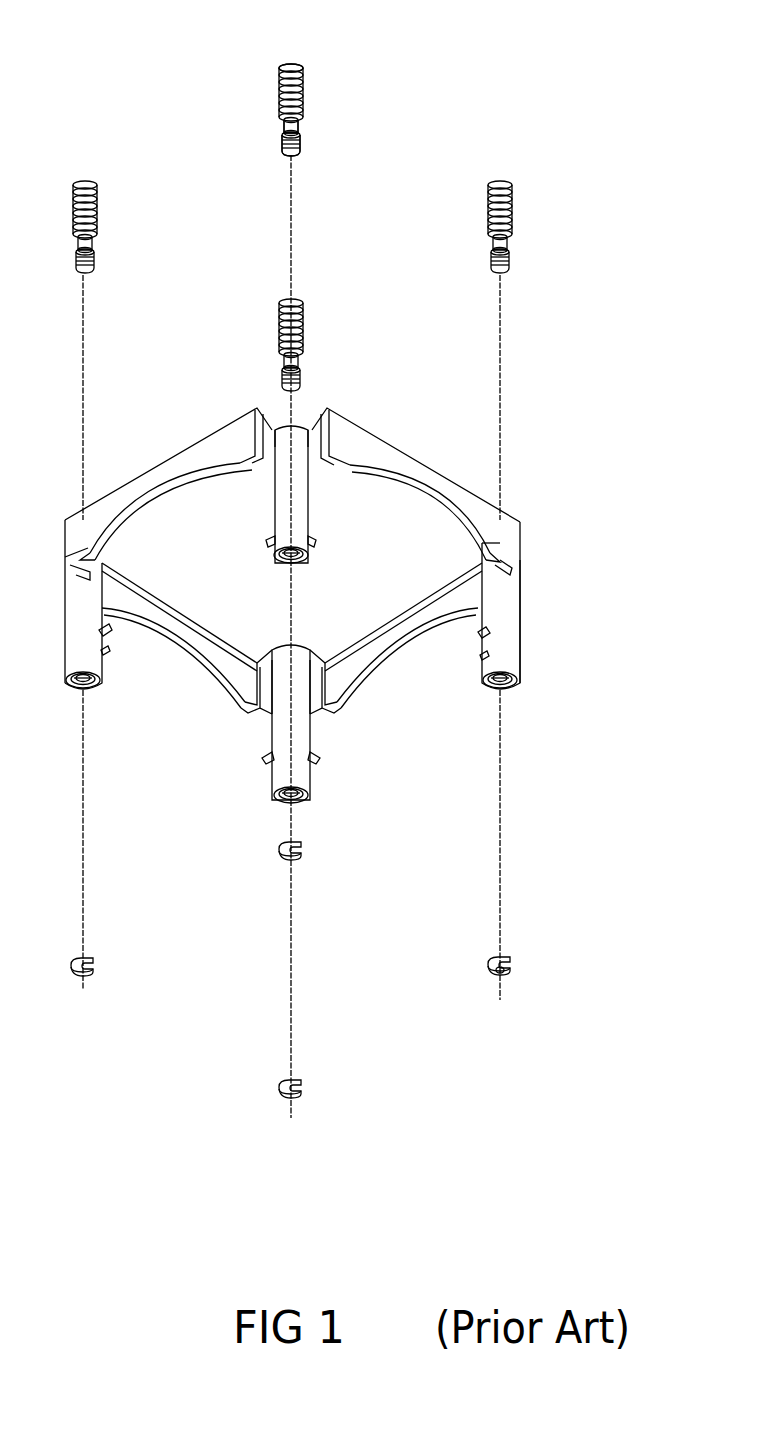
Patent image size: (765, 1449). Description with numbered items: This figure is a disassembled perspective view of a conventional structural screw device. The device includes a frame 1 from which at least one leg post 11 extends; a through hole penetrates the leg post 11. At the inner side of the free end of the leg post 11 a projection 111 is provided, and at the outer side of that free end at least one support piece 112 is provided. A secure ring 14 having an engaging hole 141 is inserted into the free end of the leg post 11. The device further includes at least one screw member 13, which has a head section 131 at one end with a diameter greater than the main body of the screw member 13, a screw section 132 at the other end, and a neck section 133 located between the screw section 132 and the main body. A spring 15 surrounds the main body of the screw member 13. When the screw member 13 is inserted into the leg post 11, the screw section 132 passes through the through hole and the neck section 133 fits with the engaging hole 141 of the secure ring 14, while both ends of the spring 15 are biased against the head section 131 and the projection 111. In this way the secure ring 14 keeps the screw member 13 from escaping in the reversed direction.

The frame 1 is at (503, 533).
The leg post 11 is at (505, 622).
The projection 111 is at (520, 677).
The support piece 112 is at (480, 640).
The screw member 13 is at (314, 93).
The head section 131 is at (293, 65).
The screw section 132 is at (318, 125).
The neck section 133 is at (284, 124).
The secure ring 14 is at (505, 958).
The engaging hole 141 is at (495, 975).
The spring 15 is at (279, 88).